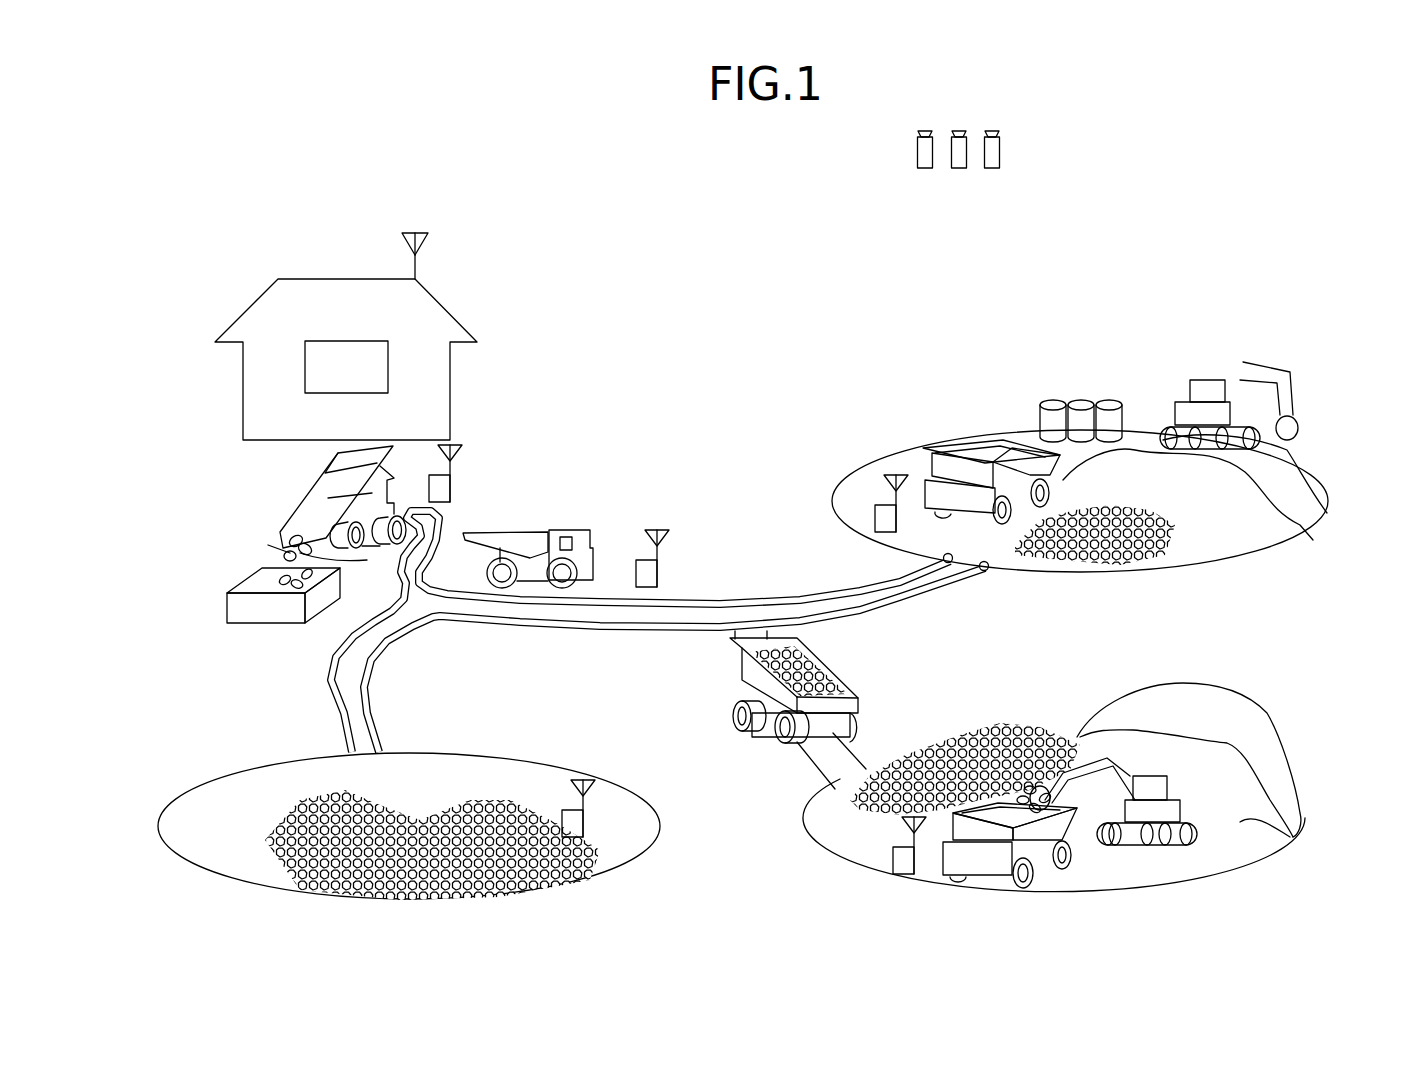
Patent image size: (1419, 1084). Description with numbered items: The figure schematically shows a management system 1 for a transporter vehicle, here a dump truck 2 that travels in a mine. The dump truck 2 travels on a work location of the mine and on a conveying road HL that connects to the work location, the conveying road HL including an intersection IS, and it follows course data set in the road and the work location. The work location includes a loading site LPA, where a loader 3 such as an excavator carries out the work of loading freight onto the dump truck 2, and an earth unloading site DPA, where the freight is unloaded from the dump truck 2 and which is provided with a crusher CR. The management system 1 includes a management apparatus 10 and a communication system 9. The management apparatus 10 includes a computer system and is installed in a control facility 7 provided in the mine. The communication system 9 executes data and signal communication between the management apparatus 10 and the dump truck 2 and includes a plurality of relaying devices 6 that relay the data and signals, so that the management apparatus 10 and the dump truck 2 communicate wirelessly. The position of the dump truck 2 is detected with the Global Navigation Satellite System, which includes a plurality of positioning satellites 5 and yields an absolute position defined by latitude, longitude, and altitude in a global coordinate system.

The management system 1 is at (1120, 228).
The transporter vehicle (dump truck) 2 is at (317, 477).
The loader 3 is at (1207, 380).
The positioning satellites 5 is at (925, 170).
The relaying devices 6 is at (461, 469).
The control facility 7 is at (346, 321).
The communication system 9 is at (674, 460).
The management apparatus 10 is at (347, 341).
The conveying road HL is at (581, 627).
The intersection IS is at (750, 598).
The crusher CR is at (268, 635).
The earth unloading site DPA is at (212, 598).
The loading site LPA is at (1415, 439).